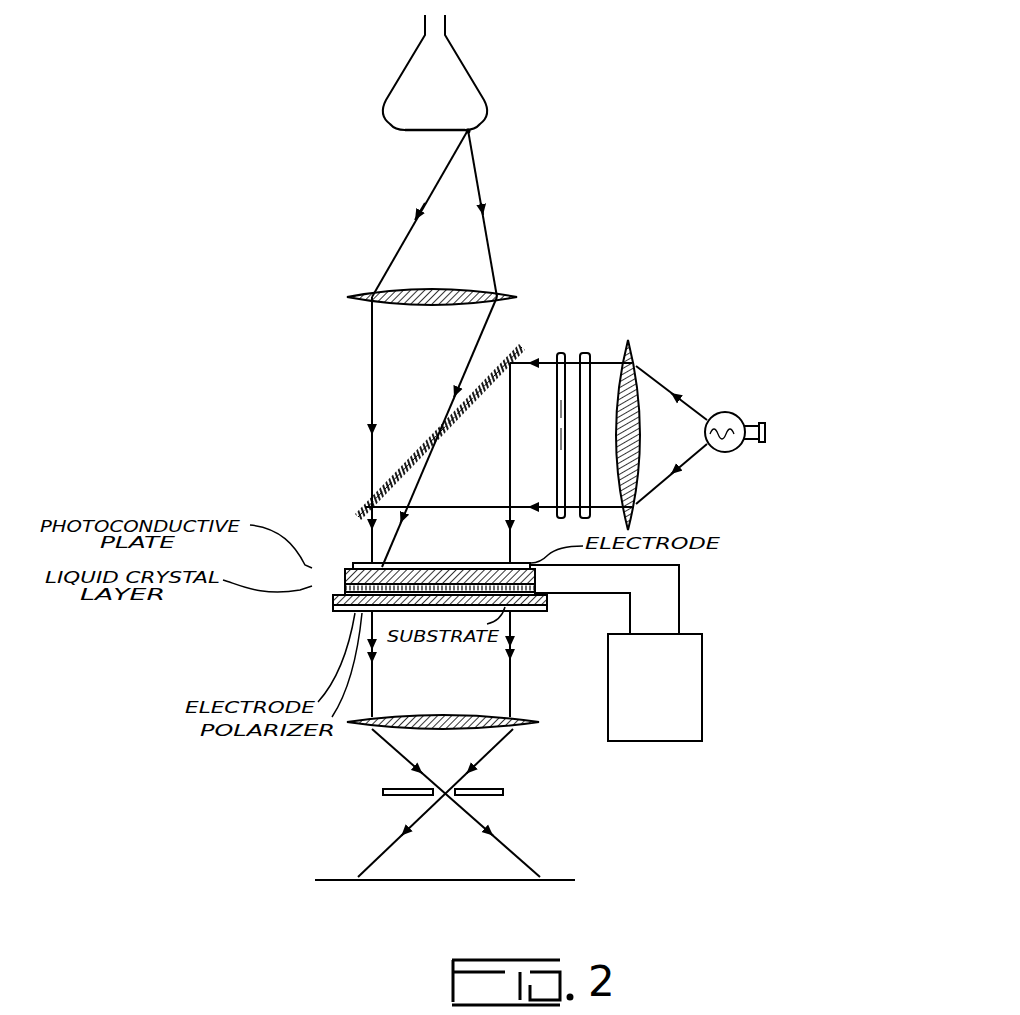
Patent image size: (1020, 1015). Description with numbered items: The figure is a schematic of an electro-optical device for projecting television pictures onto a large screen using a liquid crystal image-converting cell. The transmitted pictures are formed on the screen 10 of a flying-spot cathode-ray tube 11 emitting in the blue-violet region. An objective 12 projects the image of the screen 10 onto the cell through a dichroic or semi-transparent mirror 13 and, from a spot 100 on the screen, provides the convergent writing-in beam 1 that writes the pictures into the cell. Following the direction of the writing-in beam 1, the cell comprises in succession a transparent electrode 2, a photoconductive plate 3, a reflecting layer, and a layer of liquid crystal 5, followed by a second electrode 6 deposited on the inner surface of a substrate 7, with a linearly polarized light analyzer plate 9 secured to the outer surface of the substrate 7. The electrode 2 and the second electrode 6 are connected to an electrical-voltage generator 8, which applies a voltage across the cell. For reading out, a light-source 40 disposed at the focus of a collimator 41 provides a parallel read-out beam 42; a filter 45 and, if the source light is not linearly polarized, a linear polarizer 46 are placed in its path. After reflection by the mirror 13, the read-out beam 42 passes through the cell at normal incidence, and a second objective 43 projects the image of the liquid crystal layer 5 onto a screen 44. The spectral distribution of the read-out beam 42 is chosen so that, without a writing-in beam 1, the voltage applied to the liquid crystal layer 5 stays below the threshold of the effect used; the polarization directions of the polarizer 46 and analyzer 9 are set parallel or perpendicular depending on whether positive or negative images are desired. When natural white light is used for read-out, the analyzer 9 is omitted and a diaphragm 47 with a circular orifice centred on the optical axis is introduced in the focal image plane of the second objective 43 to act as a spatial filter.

The screen 10 is at (408, 133).
The cathode-ray tube 11 is at (455, 84).
The spot 100 is at (472, 132).
The objective 12 is at (392, 288).
The dichroic or semi-transparent mirror 13 is at (365, 503).
The writing-in beam 1 is at (386, 549).
The electrode 2 is at (353, 563).
The photoconductive plate 3 is at (345, 584).
The liquid crystal layer 5 is at (345, 594).
The second electrode 6 is at (345, 600).
The substrate 7 is at (345, 606).
The analyzer plate 9 is at (347, 612).
The read-out beam 42 is at (473, 556).
The linear polarizer 46 is at (560, 353).
The filter 45 is at (586, 353).
The collimator 41 is at (637, 351).
The light-source 40 is at (719, 414).
The electrical-voltage generator 8 is at (703, 678).
The second objective 43 is at (527, 720).
The diaphragm 47 is at (505, 792).
The screen 44 is at (552, 878).